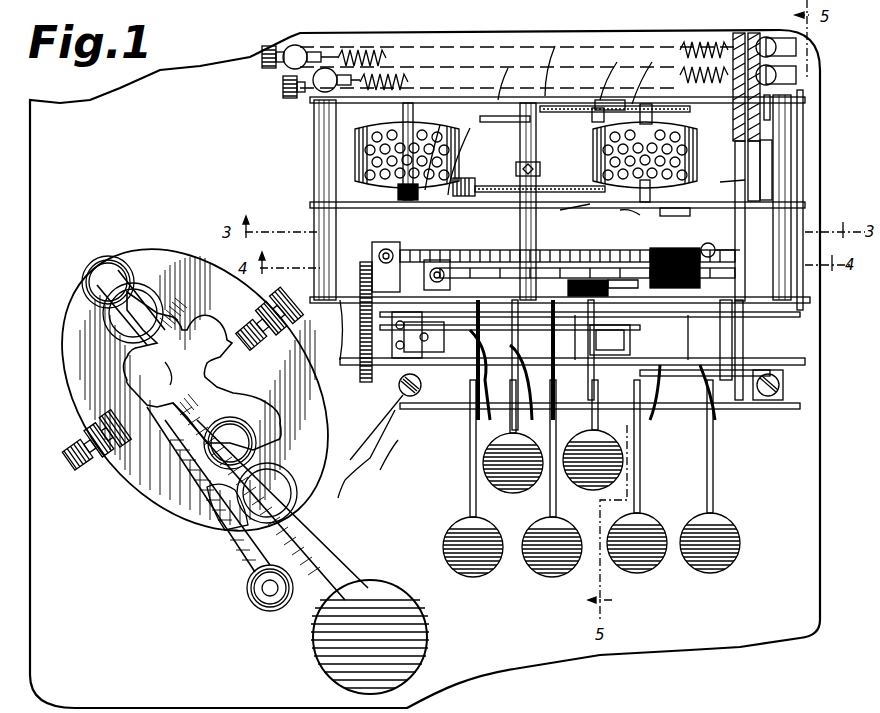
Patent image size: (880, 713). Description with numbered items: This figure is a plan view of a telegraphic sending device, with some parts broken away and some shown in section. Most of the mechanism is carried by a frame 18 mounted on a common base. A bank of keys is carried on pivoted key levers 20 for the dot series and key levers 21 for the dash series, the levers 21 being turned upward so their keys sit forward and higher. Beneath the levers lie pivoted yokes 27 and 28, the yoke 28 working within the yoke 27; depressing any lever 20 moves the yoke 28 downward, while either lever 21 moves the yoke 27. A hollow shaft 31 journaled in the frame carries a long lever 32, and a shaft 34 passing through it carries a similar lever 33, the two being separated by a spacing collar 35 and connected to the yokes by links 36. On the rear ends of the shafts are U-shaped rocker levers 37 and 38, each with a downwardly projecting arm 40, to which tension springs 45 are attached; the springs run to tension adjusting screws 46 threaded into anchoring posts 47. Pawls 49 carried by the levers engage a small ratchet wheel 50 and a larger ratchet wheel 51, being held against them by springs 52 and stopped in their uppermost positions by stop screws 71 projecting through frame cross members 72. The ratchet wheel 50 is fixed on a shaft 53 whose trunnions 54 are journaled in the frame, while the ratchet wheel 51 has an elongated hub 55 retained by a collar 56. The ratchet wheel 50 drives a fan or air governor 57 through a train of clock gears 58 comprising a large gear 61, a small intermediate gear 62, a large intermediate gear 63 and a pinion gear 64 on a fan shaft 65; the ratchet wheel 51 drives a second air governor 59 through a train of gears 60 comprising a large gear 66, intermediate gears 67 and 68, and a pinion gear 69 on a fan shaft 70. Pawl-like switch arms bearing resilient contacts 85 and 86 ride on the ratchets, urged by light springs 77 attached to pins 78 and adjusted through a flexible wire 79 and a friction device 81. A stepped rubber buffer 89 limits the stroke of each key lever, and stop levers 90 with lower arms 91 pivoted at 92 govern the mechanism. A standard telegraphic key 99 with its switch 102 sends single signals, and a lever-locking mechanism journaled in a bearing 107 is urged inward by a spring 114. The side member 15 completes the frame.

The frame side member 15 is at (797, 118).
The frame 18 is at (312, 150).
The key levers 20 is at (470, 488).
The key levers 21 is at (510, 440).
The yoke 27 is at (383, 455).
The yoke 28 is at (610, 340).
The hollow shaft 31 is at (722, 181).
The long lever 32 is at (405, 392).
The lever 33 is at (390, 396).
The shaft 34 is at (738, 36).
The spacing collar 35 is at (772, 400).
The links 36 is at (655, 420).
The rocker lever 37 is at (780, 75).
The rocker lever 38 is at (764, 37).
The arm 40 is at (778, 68).
The tension springs 45 is at (400, 82).
The tension adjusting screws 46 is at (268, 46).
The anchoring posts 47 is at (326, 70).
The pawls 49 is at (376, 248).
The ratchet wheel 50 is at (498, 268).
The ratchet wheel 51 is at (478, 250).
The springs 52 is at (332, 330).
The shaft 53 is at (525, 140).
The trunnions 54 is at (544, 63).
The elongated hub 55 is at (575, 216).
The collar 56 is at (541, 168).
The fan or air governor 57 is at (690, 135).
The train of clock gears 58 is at (545, 120).
The fan wheel or air governor 59 is at (384, 135).
The train of gears 60 is at (476, 182).
The large gear 61 is at (504, 76).
The small intermediate gear 62 is at (605, 84).
The large intermediate gear 63 is at (644, 85).
The pinion gear 64 is at (650, 110).
The fan shaft 65 is at (640, 190).
The large gear 66 is at (626, 217).
The intermediate gear 67 is at (463, 153).
The intermediate gear 68 is at (437, 149).
The pinion gear 69 is at (398, 192).
The fan shaft 70 is at (412, 100).
The stop screws 71 is at (450, 262).
The frame cross members 72 is at (362, 290).
The springs 77 is at (672, 214).
The pins 78 is at (688, 190).
The flexible wire 79 is at (695, 470).
The friction device 81 is at (700, 372).
The resilient contact 85 is at (585, 280).
The resilient contact 86 is at (672, 248).
The rubber buffer 89 is at (760, 400).
The stop levers 90 is at (480, 372).
The lower arm 91 is at (515, 428).
The pivot 92 is at (590, 405).
The telegraphic key 99 is at (428, 635).
The switch 102 is at (236, 445).
The bearing 107 is at (432, 335).
The spring 114 is at (357, 484).